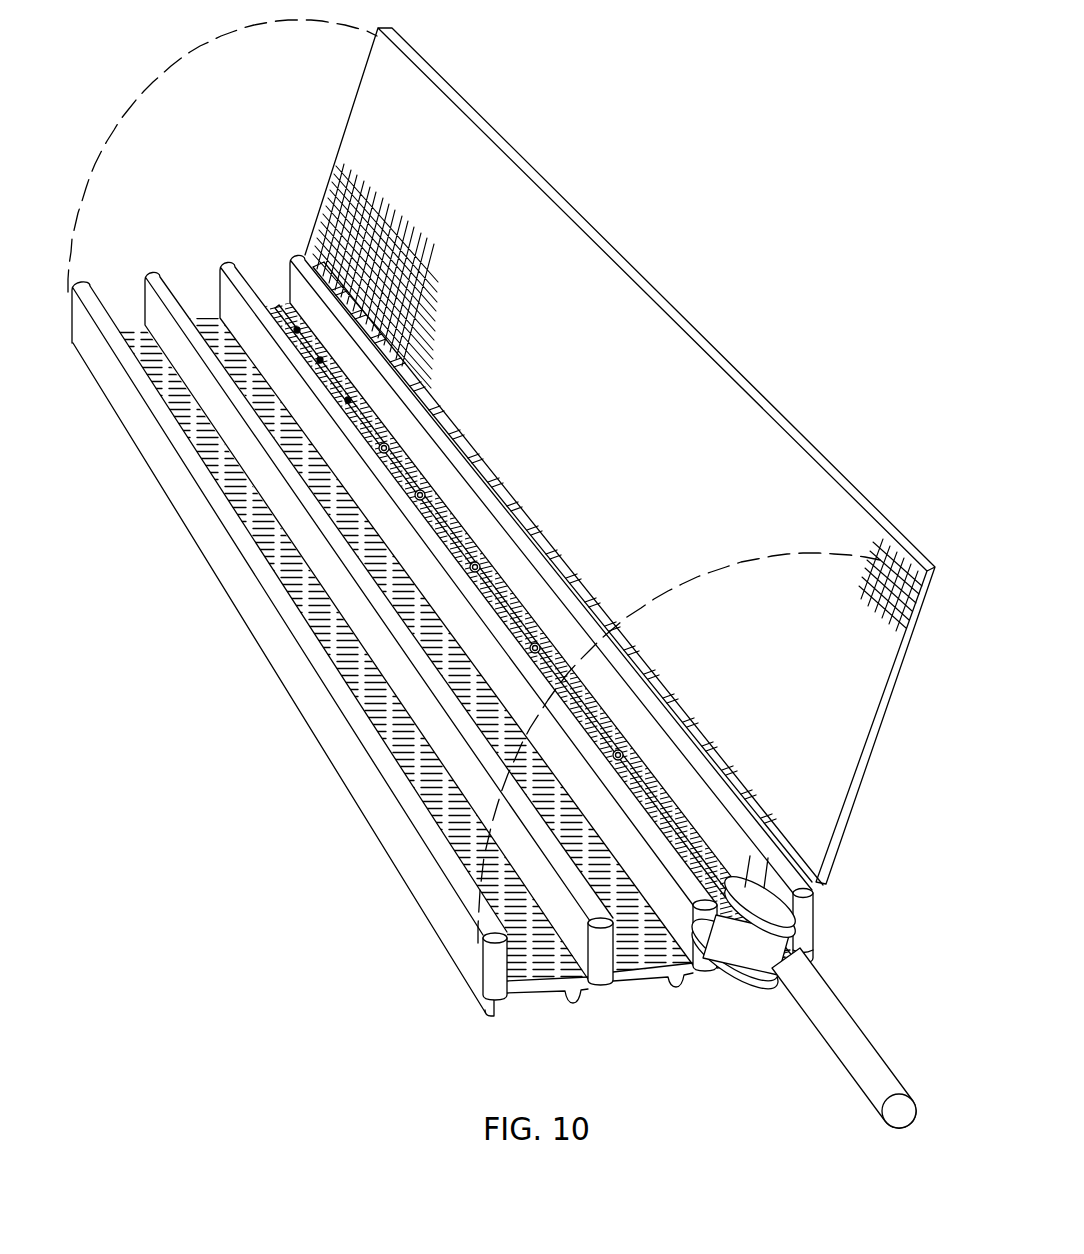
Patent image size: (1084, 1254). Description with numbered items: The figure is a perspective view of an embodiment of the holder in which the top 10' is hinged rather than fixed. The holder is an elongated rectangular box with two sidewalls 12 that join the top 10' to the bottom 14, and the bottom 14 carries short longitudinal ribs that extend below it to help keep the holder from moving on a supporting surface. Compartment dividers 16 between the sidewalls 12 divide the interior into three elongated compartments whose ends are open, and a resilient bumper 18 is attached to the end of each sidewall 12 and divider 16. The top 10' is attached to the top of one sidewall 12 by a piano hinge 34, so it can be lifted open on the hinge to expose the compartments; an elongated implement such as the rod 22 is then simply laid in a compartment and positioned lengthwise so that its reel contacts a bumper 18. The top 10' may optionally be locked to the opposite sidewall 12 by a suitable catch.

The hinged top 10' is at (501, 481).
The sidewall 12 is at (297, 675).
The bottom 14 is at (633, 948).
The compartment divider 16 is at (157, 315).
The resilient bumper 18 is at (492, 972).
The rod 22 is at (848, 1078).
The piano hinge 34 is at (580, 595).